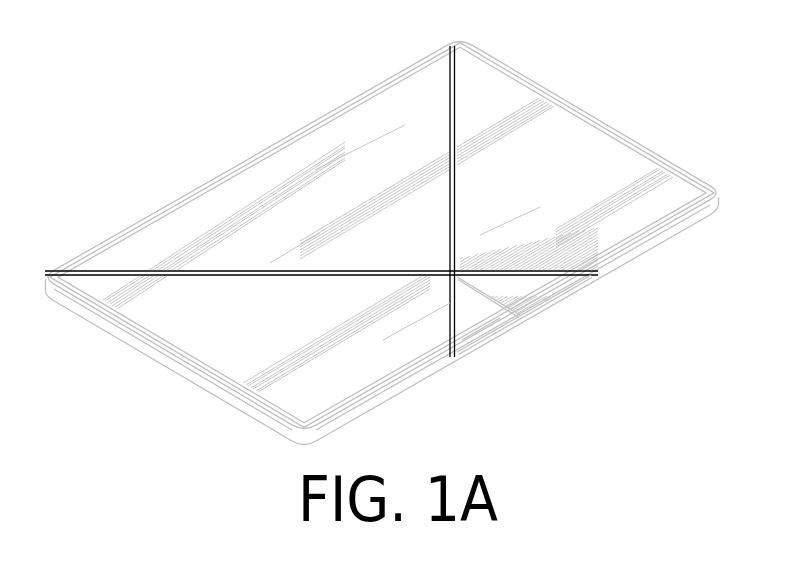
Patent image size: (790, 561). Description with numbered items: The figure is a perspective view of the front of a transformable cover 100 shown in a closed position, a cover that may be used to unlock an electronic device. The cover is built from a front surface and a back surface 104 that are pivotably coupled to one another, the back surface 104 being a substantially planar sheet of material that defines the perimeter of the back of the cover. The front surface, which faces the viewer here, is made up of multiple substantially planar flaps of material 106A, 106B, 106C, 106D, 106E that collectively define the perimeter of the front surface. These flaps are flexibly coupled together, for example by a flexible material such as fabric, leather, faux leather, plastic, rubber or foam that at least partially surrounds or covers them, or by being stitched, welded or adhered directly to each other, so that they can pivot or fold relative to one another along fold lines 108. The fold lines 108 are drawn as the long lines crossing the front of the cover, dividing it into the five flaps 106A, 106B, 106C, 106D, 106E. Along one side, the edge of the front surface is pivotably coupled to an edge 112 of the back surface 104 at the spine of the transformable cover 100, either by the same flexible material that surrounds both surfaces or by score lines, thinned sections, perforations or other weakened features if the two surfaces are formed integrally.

The transformable cover 100 is at (142, 72).
The back surface 104 is at (606, 148).
The substantially planar flap of material 106A is at (438, 227).
The substantially planar flap of material 106B is at (548, 197).
The substantially planar flap of material 106C is at (275, 312).
The substantially planar flap of material 106D is at (539, 295).
The substantially planar flap of material 106E is at (498, 320).
The fold lines 108 is at (444, 55).
The edge of the back surface 112 is at (132, 226).